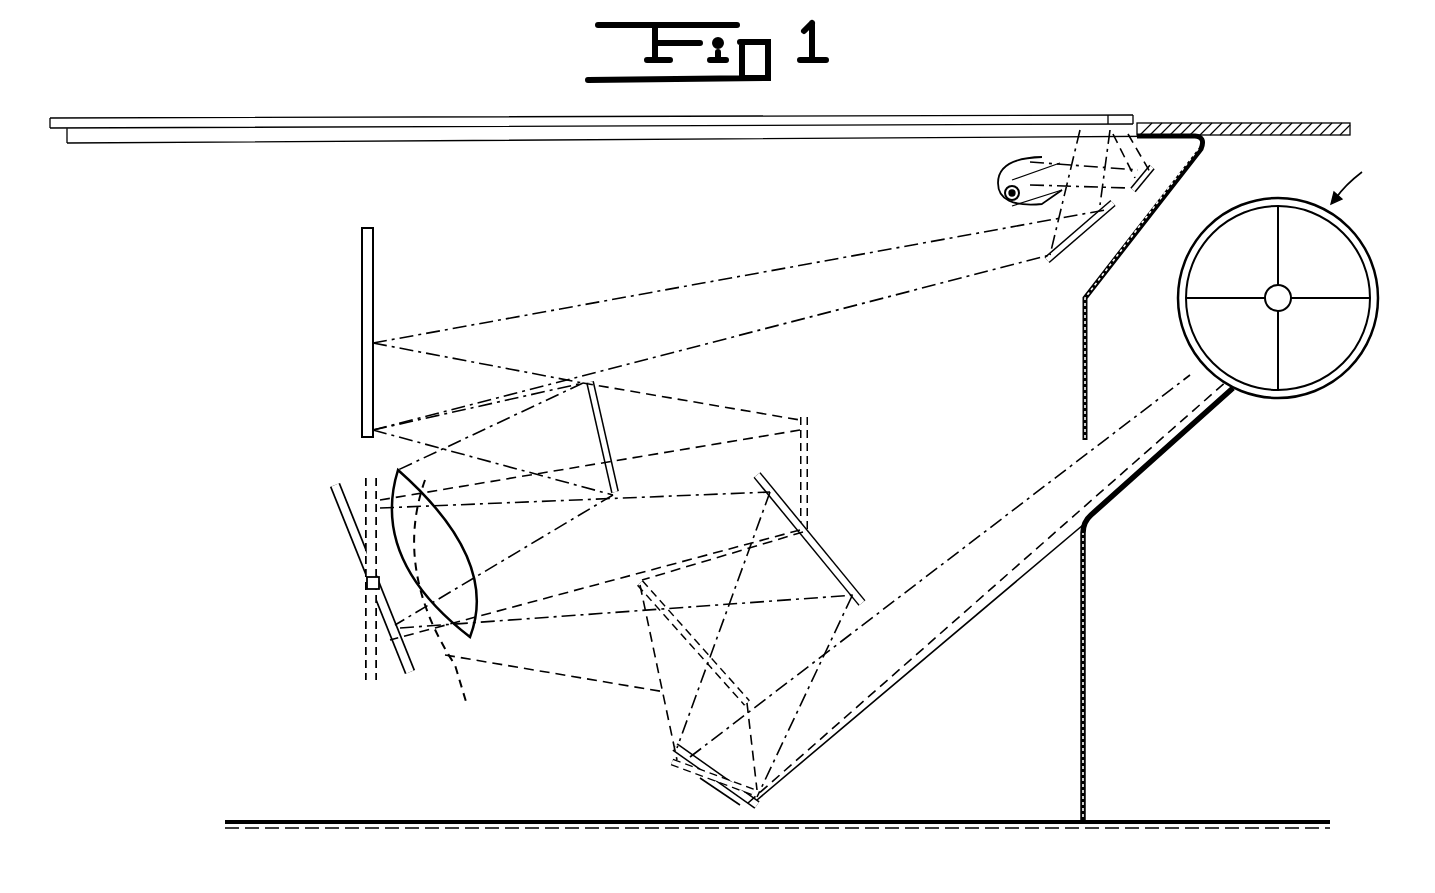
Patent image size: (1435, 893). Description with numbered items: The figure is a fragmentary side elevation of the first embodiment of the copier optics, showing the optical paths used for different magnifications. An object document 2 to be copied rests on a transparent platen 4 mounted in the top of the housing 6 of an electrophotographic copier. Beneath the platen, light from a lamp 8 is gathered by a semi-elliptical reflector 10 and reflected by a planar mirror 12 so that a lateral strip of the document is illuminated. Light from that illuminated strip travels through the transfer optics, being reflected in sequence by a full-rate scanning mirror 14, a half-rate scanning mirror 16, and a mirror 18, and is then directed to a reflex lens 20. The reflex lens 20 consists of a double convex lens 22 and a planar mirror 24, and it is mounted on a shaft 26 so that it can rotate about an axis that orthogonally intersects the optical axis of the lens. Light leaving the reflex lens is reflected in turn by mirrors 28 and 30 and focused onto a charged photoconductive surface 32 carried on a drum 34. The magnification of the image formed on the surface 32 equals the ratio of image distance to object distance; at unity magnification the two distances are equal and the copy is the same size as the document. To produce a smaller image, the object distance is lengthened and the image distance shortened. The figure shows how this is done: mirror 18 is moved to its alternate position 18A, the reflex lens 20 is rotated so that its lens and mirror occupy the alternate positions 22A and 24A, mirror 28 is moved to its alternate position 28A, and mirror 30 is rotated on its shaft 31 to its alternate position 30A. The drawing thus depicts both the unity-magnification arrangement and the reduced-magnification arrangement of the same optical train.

The object document 2 is at (1128, 117).
The transparent platen 4 is at (820, 143).
The housing 6 is at (1297, 120).
The lamp 8 is at (1004, 195).
The semi-elliptical reflector 10 is at (1037, 158).
The planar mirror 12 is at (1160, 177).
The full-rate scanning mirror 14 is at (1050, 262).
The half-rate scanning mirror 16 is at (362, 283).
The mirror 18 is at (606, 440).
The alternate position of mirror 18 18A is at (806, 463).
The reflex lens 20 is at (395, 618).
The double convex lens 22 is at (464, 530).
The alternate position of lens 22 22A is at (463, 607).
The planar mirror 24 is at (349, 520).
The alternate position of mirror 24 24A is at (366, 678).
The shaft 26 is at (368, 585).
The mirror 28 is at (833, 562).
The alternate position of mirror 28 28A is at (724, 664).
The mirror 30 is at (674, 748).
The alternate position of mirror 30 30A is at (672, 768).
The shaft 31 is at (707, 783).
The photoconductive surface 32 is at (1305, 398).
The drum 34 is at (1366, 175).